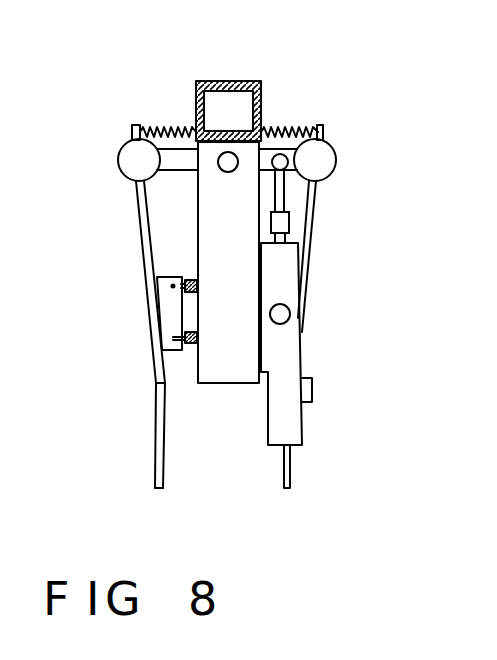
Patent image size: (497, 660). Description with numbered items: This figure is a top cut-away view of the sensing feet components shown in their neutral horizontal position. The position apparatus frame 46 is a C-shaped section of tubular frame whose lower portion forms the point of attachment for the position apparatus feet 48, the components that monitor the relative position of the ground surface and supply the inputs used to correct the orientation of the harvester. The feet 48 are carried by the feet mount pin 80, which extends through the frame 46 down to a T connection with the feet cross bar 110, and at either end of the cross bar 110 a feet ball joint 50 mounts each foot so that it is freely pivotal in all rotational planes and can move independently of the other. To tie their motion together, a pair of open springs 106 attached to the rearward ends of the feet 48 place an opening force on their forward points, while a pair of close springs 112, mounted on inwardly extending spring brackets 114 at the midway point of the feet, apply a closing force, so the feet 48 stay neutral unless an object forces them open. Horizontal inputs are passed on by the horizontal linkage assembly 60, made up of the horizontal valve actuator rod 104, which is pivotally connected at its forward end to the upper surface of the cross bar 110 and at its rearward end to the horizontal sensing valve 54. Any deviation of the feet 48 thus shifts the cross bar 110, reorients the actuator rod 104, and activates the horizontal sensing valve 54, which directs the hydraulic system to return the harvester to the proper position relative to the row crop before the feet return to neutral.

The position apparatus frame 46 is at (265, 90).
The position apparatus feet 48 is at (140, 207).
The feet ball joint 50 is at (118, 148).
The horizontal sensing valve 54 is at (293, 335).
The horizontal linkage assembly 60 is at (290, 204).
The feet mount pin 80 is at (228, 172).
The horizontal valve actuator rod 104 is at (287, 222).
The open springs 106 is at (147, 127).
The feet cross bar 110 is at (187, 155).
The close springs 112 is at (180, 291).
The spring brackets 114 is at (171, 287).